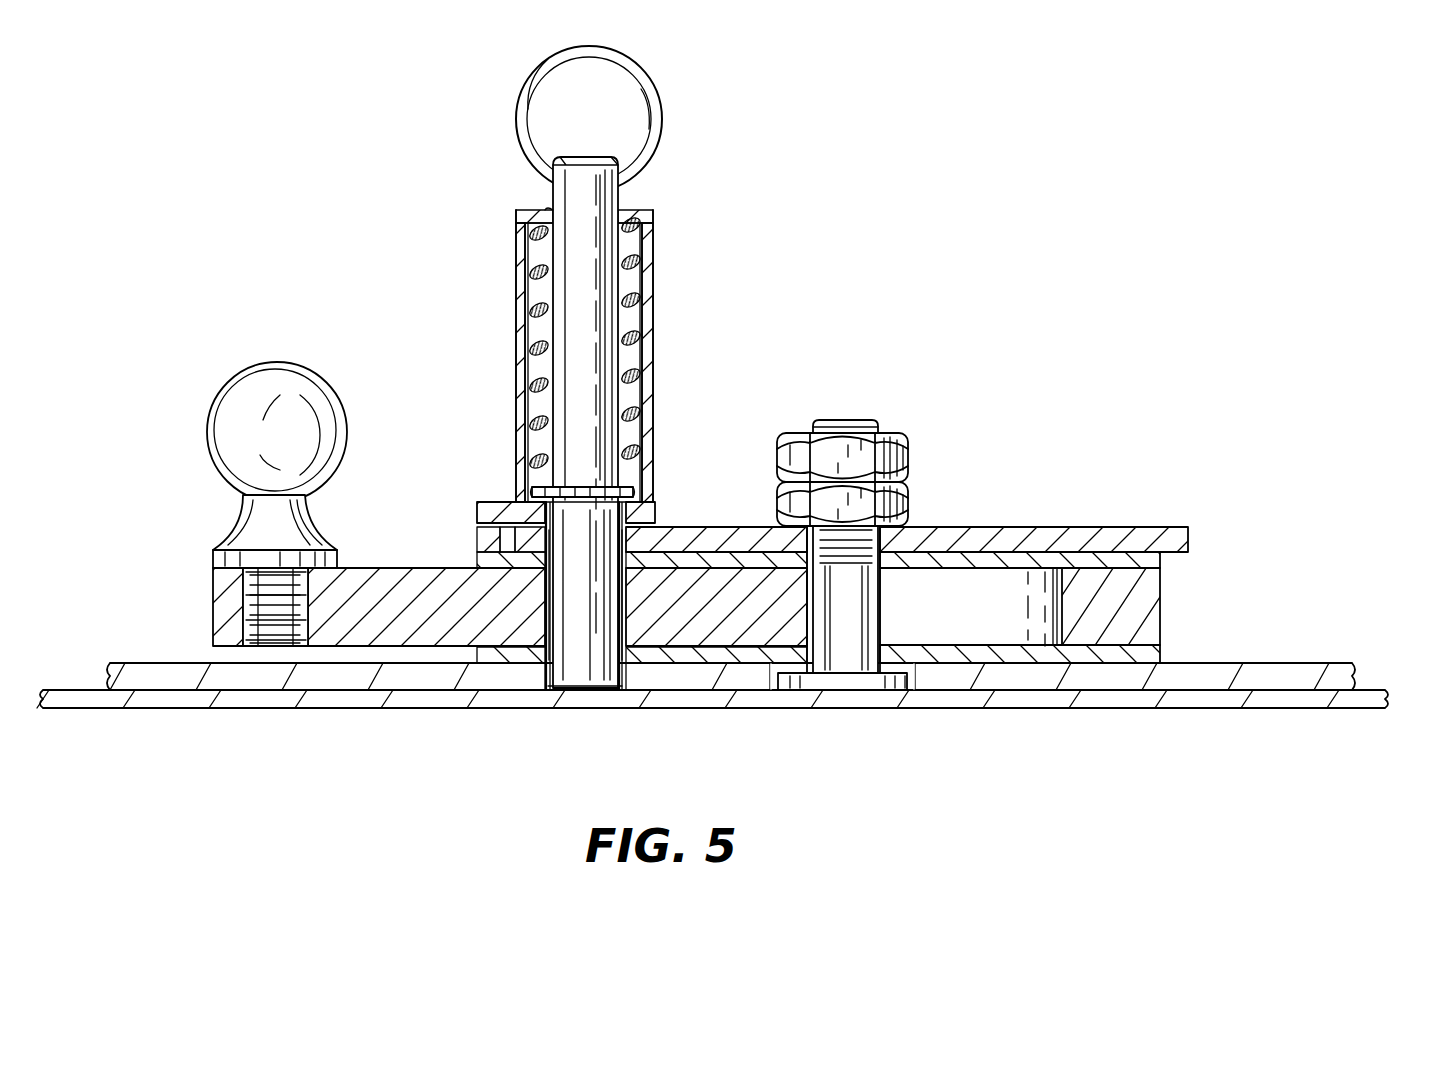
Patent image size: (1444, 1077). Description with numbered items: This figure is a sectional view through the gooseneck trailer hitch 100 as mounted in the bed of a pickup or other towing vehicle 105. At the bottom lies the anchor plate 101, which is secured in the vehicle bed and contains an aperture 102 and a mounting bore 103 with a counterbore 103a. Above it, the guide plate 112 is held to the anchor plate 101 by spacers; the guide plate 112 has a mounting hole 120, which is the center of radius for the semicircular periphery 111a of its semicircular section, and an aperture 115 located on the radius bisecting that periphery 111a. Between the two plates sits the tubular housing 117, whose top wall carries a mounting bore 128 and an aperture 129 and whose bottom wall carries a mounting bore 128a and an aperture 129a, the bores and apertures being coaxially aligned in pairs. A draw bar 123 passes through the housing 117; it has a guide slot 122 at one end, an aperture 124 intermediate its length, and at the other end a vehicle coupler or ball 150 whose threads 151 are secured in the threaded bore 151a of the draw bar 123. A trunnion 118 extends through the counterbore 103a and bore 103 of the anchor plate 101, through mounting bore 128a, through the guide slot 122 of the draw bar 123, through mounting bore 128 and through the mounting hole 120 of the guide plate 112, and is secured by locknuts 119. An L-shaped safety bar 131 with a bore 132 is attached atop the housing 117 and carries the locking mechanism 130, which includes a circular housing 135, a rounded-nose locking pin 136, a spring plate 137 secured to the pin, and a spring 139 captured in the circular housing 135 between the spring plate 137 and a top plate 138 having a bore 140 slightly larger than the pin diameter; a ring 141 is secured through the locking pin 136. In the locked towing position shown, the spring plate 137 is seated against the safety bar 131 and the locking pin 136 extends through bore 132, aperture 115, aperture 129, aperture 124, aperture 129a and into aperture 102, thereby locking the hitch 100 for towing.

The gooseneck trailer hitch 100 is at (948, 270).
The anchor plate 101 is at (128, 663).
The aperture 102 is at (608, 663).
The mounting bore 103 is at (804, 690).
The counterbore 103a is at (795, 693).
The towing vehicle 105 is at (60, 694).
The semicircular periphery 111a is at (479, 547).
The guide plate 112 is at (1056, 527).
The aperture 115 is at (477, 513).
The housing 117 is at (1004, 527).
The trunnion 118 is at (889, 547).
The locknuts 119 is at (900, 486).
The mounting hole 120 is at (819, 523).
The guide slot 122 is at (958, 628).
The draw bar 123 is at (406, 568).
The aperture 124 is at (545, 660).
The mounting bore 128 is at (807, 548).
The mounting bore 128a is at (876, 690).
The aperture 129 is at (613, 529).
The aperture 129a is at (605, 663).
The locking mechanism 130 is at (680, 356).
The safety bar 131 is at (495, 492).
The bore 132 is at (538, 488).
The circular housing 135 is at (646, 288).
The locking pin 136 is at (598, 212).
The spring plate 137 is at (606, 482).
The top plate 138 is at (644, 217).
The spring 139 is at (539, 268).
The bore 140 is at (553, 206).
The ring 141 is at (644, 72).
The ball 150 is at (238, 405).
The threads 151 is at (258, 592).
The threaded bore 151a is at (256, 618).